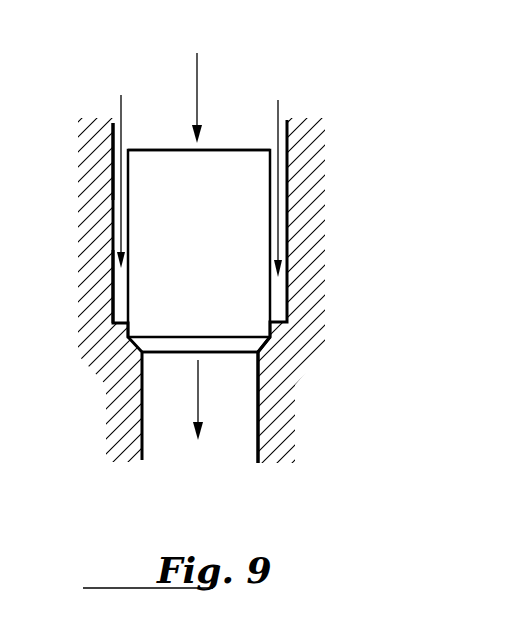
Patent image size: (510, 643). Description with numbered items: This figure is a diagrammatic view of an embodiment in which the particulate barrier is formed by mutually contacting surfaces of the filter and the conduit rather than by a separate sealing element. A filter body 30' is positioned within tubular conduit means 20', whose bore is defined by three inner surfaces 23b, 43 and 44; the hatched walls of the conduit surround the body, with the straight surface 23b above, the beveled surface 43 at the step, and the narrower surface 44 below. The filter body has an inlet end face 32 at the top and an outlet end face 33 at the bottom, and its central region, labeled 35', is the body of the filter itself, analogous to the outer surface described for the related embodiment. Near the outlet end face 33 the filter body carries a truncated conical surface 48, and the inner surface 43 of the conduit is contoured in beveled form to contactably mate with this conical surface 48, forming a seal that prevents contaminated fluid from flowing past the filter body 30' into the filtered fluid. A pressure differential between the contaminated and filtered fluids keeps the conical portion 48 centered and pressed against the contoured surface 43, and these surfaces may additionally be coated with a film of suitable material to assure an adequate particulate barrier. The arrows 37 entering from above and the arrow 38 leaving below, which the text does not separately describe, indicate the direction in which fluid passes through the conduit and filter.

The tubular conduit means 20' is at (255, 250).
The inner surface 23b is at (113, 137).
The filter body 30' is at (64, 286).
The inlet end face 32 is at (220, 148).
The outlet end face 33 is at (225, 357).
The plug 35' is at (199, 243).
The flow direction arrows 37 is at (123, 108).
The outlet flow arrow 38 is at (193, 403).
The inner surface 43 is at (265, 347).
The inner surface 44 is at (258, 437).
The truncated conical surface 48 is at (155, 343).